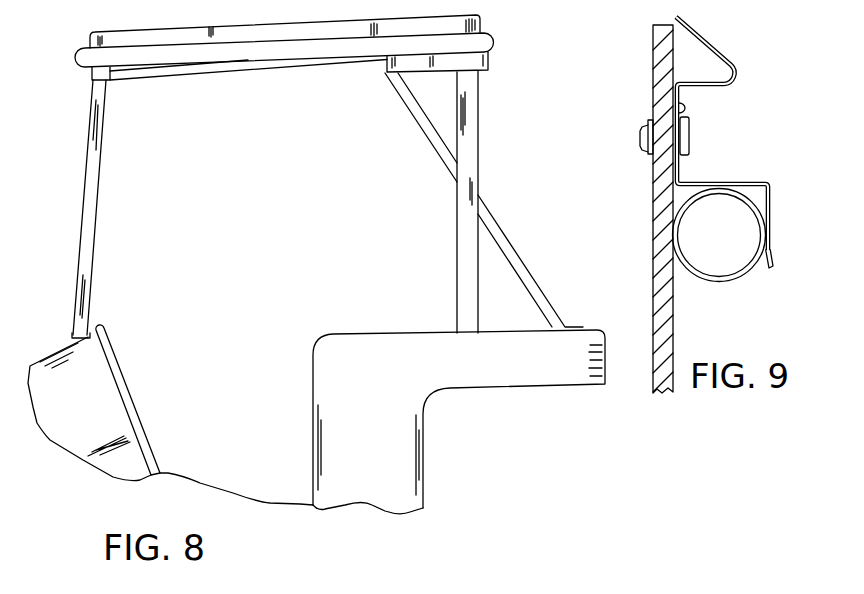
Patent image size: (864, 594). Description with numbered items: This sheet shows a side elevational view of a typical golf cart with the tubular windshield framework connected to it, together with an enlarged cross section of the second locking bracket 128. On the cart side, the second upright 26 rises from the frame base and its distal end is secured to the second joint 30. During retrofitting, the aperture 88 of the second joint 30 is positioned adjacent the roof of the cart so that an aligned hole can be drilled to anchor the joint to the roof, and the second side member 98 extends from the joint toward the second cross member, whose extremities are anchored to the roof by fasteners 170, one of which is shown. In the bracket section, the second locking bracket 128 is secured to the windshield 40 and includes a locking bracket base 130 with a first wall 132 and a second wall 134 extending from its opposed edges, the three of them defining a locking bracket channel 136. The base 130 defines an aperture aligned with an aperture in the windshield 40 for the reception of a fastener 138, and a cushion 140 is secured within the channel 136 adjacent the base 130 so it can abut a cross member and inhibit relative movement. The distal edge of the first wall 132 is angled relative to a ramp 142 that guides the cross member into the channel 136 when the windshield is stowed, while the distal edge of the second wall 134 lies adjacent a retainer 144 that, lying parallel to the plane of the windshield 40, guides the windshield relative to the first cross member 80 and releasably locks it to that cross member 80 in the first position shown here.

In FIG. 8, the second upright 26 is at (87, 263).
In FIG. 8, the second joint 30 is at (93, 75).
In FIG. 9, the windshield 40 is at (652, 275).
In FIG. 9, the first cross member 80 is at (741, 281).
In FIG. 8, the aperture 88 is at (98, 57).
In FIG. 8, the second side member 98 is at (152, 70).
In FIG. 9, the second locking bracket 128 is at (710, 137).
In FIG. 9, the locking bracket base 130 is at (676, 102).
In FIG. 9, the first wall 132 is at (712, 92).
In FIG. 9, the second wall 134 is at (784, 212).
In FIG. 9, the locking bracket channel 136 is at (683, 183).
In FIG. 9, the fastener 138 is at (647, 152).
In FIG. 9, the cushion 140 is at (690, 132).
In FIG. 9, the ramp 142 is at (699, 33).
In FIG. 9, the retainer 144 is at (769, 238).
In FIG. 8, the fasteners 170 is at (298, 50).